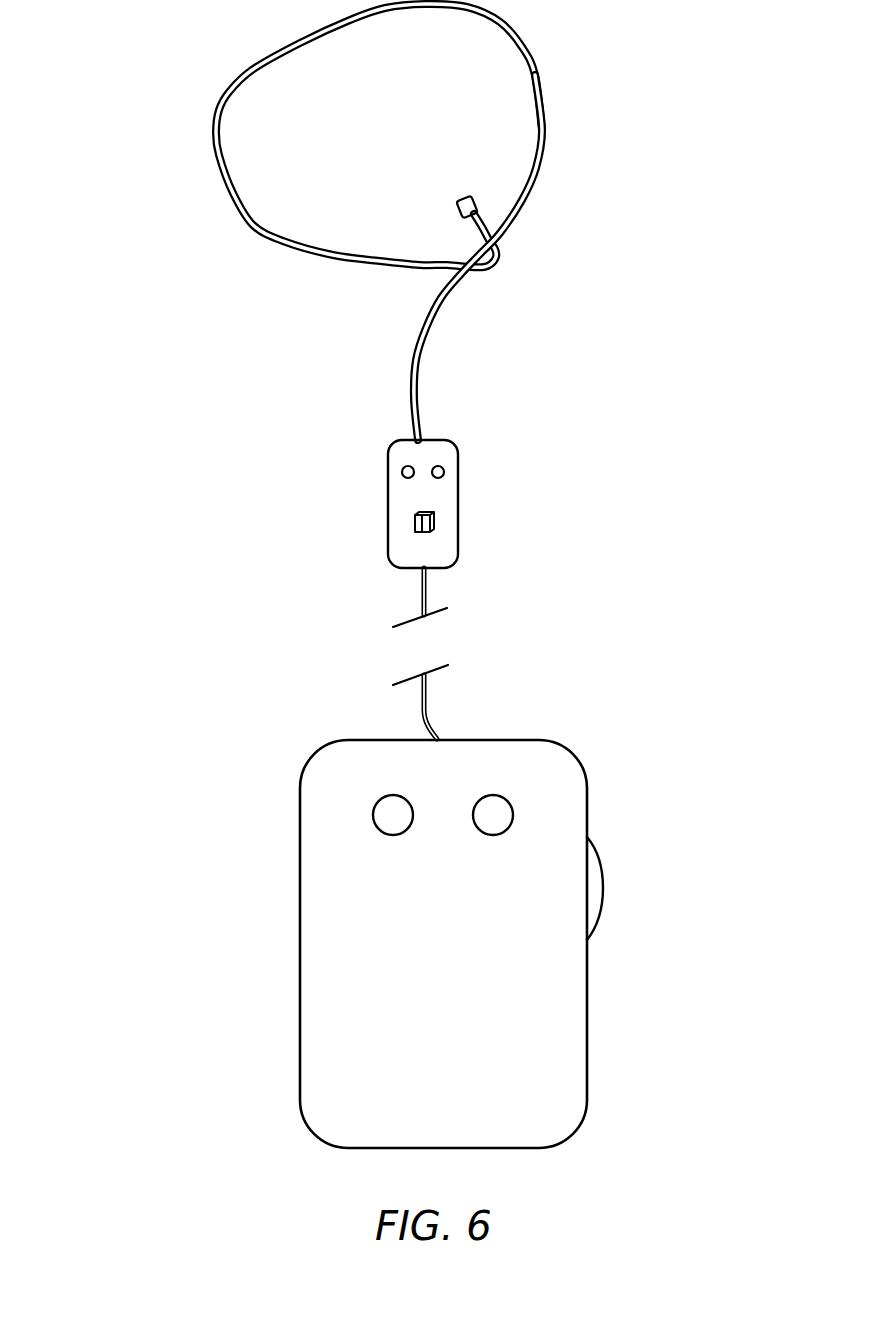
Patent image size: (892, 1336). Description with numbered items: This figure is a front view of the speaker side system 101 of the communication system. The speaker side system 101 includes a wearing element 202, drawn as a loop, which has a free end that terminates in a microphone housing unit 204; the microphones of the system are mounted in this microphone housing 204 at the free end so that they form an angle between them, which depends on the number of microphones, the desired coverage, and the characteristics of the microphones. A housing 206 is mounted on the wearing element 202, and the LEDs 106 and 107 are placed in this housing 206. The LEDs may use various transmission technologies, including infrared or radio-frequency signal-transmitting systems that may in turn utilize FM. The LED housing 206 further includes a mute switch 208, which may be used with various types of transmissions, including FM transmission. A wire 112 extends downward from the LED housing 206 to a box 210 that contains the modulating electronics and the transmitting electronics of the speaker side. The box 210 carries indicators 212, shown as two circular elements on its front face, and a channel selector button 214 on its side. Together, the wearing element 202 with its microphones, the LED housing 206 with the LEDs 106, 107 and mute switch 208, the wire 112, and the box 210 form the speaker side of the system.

The speaker side system 101 is at (133, 350).
The LED 106 is at (404, 472).
The LED 107 is at (442, 472).
The wire 112 is at (430, 597).
The wearing element 202 is at (513, 68).
The microphone housing unit 204 is at (475, 211).
The housing 206 is at (458, 452).
The mute switch 208 is at (412, 522).
The box 210 is at (558, 780).
The indicators 212 is at (490, 815).
The channel selector button 214 is at (592, 888).